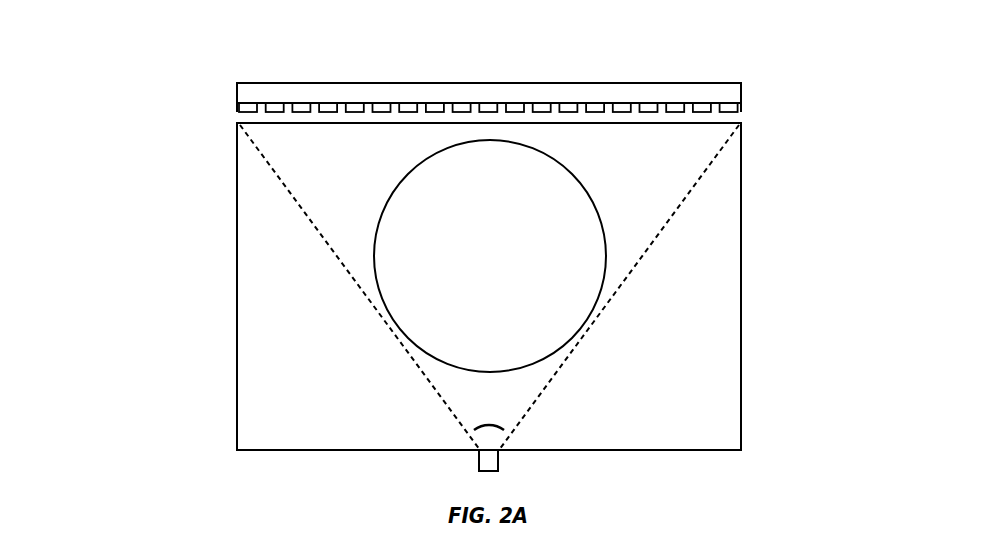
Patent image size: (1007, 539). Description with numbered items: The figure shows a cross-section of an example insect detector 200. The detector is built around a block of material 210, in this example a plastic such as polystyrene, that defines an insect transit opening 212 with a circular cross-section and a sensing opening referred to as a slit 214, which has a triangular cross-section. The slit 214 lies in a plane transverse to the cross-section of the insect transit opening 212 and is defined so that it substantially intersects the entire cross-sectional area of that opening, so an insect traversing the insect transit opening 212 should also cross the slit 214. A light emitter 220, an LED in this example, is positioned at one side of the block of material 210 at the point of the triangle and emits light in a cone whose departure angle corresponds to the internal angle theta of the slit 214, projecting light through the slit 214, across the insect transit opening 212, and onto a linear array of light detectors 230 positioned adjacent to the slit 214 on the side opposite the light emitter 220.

The insect detector 200 is at (139, 112).
The light detectors 230 is at (742, 105).
The block of material 210 is at (237, 287).
The insect transit opening 212 is at (490, 256).
The slit 214 is at (577, 342).
The light emitter 220 is at (478, 460).